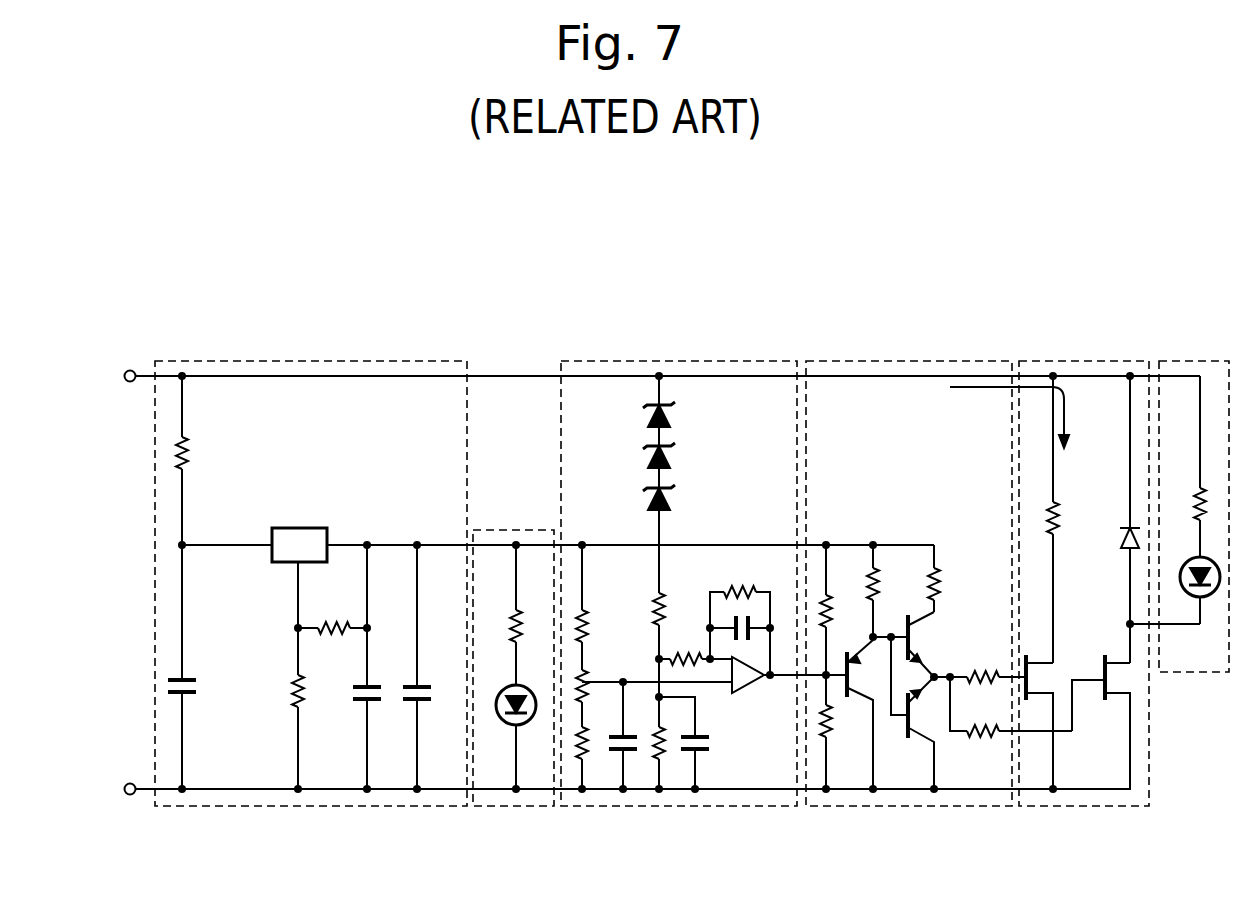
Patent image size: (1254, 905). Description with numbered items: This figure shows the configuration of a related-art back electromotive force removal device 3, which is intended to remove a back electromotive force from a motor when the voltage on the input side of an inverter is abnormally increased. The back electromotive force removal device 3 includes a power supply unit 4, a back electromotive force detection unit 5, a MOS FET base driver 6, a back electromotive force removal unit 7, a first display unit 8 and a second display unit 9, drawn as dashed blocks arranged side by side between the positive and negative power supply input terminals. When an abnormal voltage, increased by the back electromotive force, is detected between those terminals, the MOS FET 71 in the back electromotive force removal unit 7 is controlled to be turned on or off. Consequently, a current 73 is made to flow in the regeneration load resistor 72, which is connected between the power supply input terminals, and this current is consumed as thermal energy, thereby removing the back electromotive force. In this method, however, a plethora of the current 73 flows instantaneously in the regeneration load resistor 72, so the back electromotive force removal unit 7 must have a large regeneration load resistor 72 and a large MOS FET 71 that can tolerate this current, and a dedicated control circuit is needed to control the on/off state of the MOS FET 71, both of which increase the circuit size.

The back electromotive force removal device 3 is at (214, 212).
The power supply unit 4 is at (310, 361).
The back electromotive force detection unit 5 is at (645, 361).
The MOS FET base driver 6 is at (890, 361).
The back electromotive force removal unit 7 is at (1063, 361).
The first display unit 8 is at (517, 806).
The second display unit 9 is at (1193, 361).
The MOS FET 71 is at (1050, 676).
The regeneration load resistor 72 is at (1077, 519).
The current 73 is at (1026, 417).